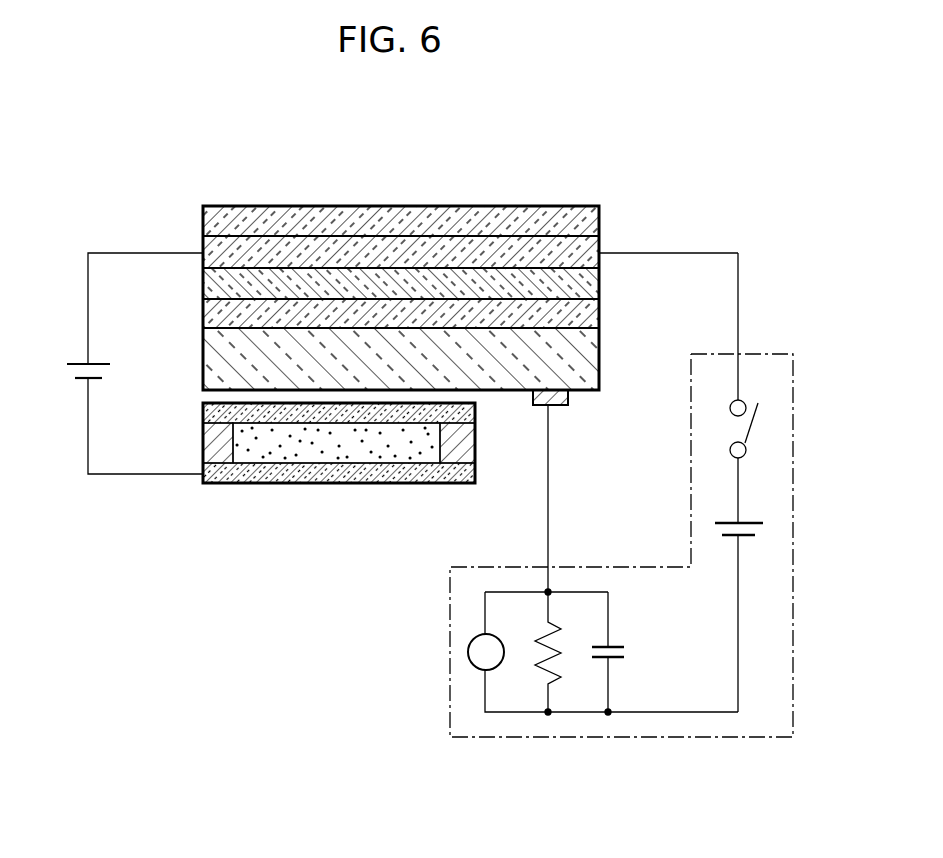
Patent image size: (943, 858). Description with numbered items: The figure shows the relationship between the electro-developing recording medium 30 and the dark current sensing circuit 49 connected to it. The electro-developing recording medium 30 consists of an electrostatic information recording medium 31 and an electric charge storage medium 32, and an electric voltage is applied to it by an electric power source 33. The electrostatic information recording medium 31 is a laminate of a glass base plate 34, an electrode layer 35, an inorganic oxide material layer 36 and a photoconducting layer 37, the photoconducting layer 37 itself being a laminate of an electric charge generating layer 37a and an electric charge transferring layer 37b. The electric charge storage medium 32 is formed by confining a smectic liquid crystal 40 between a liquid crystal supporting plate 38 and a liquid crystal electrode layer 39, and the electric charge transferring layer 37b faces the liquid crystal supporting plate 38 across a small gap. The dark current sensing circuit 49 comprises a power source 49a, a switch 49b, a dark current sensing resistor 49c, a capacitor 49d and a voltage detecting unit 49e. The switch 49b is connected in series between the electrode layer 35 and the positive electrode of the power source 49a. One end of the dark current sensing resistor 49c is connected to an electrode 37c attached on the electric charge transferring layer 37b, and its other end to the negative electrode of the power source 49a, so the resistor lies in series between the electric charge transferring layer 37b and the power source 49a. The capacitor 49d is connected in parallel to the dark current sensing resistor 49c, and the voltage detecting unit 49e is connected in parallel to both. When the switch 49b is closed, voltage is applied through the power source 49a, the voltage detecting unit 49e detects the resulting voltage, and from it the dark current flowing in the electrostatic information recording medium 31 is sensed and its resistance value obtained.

The electro-developing recording medium 30 is at (120, 403).
The electrostatic information recording medium 31 is at (392, 259).
The electric charge storage medium 32 is at (306, 490).
The electric power source 33 is at (72, 355).
The glass base plate 34 is at (507, 207).
The electrode layer 35 is at (203, 246).
The inorganic oxide material layer 36 is at (203, 283).
The photoconducting layer 37 is at (392, 344).
The electric charge generating layer 37a is at (203, 313).
The electric charge transferring layer 37b is at (203, 355).
The electrode 37c is at (568, 397).
The liquid crystal supporting plate 38 is at (203, 411).
The liquid crystal electrode layer 39 is at (345, 485).
The liquid crystal 40 is at (410, 447).
The dark current sensing circuit 49 is at (628, 585).
The power source 49a is at (760, 523).
The switch 49b is at (765, 408).
The dark current sensing resistor 49c is at (538, 660).
The capacitor 49d is at (639, 679).
The voltage detecting unit 49e is at (468, 652).